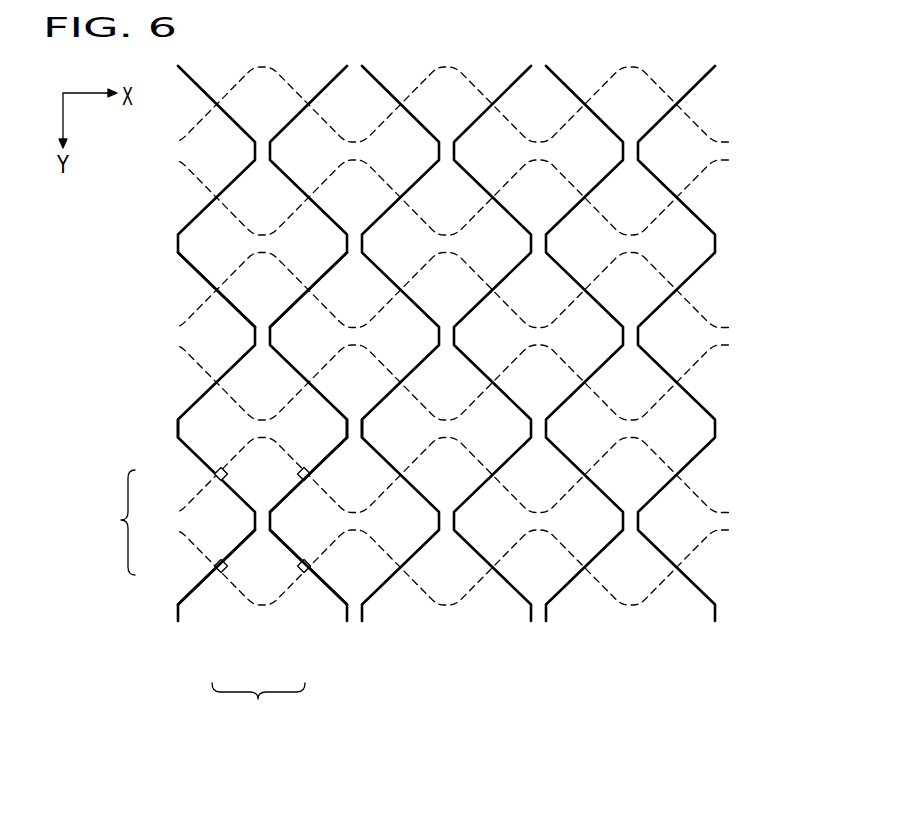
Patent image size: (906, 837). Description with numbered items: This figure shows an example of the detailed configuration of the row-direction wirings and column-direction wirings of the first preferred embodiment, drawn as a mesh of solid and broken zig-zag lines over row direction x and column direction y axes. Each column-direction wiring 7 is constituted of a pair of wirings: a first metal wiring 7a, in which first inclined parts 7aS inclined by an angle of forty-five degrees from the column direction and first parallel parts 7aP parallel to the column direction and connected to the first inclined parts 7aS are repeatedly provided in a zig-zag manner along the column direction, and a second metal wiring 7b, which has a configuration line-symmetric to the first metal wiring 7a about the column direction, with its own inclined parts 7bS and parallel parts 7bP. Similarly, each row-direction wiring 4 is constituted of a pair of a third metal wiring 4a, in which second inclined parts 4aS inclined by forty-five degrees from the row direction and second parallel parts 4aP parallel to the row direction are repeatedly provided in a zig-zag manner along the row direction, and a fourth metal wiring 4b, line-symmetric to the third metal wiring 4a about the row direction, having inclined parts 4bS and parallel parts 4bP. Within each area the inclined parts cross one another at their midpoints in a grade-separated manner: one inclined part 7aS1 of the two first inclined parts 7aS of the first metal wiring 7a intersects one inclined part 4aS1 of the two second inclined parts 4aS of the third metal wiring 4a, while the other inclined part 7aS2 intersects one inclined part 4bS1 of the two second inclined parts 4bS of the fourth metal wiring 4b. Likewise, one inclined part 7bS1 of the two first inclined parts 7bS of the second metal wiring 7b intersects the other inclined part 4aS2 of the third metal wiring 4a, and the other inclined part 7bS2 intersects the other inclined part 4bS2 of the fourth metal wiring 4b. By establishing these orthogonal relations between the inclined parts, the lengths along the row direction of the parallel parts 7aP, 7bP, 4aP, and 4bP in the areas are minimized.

The row-direction wiring 4 is at (120, 522).
The third metal wiring 4a is at (200, 489).
The fourth metal wiring 4b is at (200, 556).
The second inclined part 4aS is at (703, 306).
The second inclined part 4bS is at (702, 360).
The inclined part 4aS1 is at (248, 442).
The inclined part 4aS2 is at (318, 485).
The inclined part 4bS1 is at (229, 573).
The inclined part 4bS2 is at (298, 574).
The second parallel part 4aP is at (372, 511).
The parallel part 4bP is at (372, 531).
The column-direction wiring 7 is at (258, 706).
The first metal wiring 7a is at (187, 606).
The second metal wiring 7b is at (327, 590).
The first inclined part 7aS is at (200, 279).
The first inclined part 7bS is at (326, 269).
The inclined part 7aS1 is at (202, 456).
The inclined part 7aS2 is at (187, 594).
The inclined part 7bS1 is at (341, 441).
The inclined part 7bS2 is at (326, 590).
The first parallel part 7aP is at (364, 427).
The parallel part 7bP is at (345, 428).